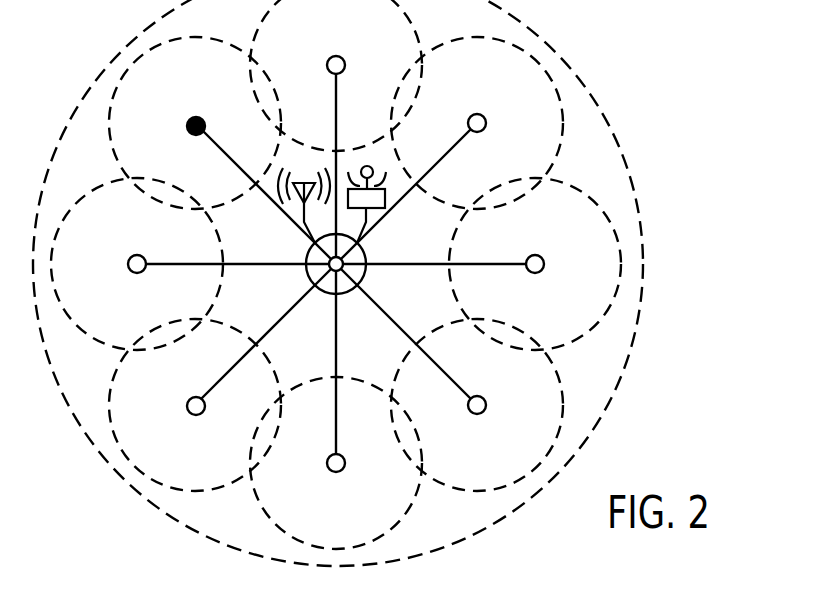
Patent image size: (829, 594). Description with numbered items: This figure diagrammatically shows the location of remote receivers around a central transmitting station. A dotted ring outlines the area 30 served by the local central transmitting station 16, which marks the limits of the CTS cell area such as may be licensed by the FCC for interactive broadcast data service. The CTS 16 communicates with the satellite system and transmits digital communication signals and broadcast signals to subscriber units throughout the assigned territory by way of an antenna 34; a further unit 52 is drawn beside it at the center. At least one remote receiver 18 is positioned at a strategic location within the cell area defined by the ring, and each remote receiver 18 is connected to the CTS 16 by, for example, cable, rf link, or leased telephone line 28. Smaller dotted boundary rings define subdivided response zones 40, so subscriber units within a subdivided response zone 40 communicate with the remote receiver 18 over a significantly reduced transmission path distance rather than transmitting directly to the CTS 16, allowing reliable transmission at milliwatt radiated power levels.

The central transmitting station 16 is at (343, 295).
The remote receiver 18 is at (197, 416).
The leased telephone line 28 is at (200, 398).
The area 30 is at (551, 47).
The antenna 34 is at (305, 182).
The subdivided response zone 40 is at (112, 402).
The base station unit 52 is at (388, 193).